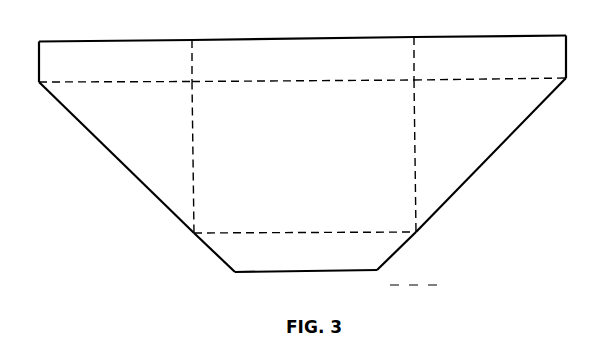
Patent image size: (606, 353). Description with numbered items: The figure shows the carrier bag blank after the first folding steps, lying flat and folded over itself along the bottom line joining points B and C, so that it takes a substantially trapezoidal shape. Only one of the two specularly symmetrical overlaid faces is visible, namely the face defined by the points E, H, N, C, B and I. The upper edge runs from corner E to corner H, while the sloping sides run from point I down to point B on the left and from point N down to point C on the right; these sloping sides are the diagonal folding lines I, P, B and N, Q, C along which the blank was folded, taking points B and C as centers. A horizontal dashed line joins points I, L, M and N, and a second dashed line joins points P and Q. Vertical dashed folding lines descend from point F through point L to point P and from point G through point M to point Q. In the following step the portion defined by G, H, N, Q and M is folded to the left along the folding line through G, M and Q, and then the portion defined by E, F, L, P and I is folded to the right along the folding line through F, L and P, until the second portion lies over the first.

The corner point E is at (111, 31).
The point F is at (300, 51).
The point G is at (487, 48).
The corner point H is at (570, 47).
The point I is at (110, 138).
The point L is at (123, 148).
The point M is at (313, 145).
The point N is at (500, 148).
The point P is at (298, 250).
The point Q is at (407, 248).
The point B is at (303, 283).
The point C is at (407, 287).